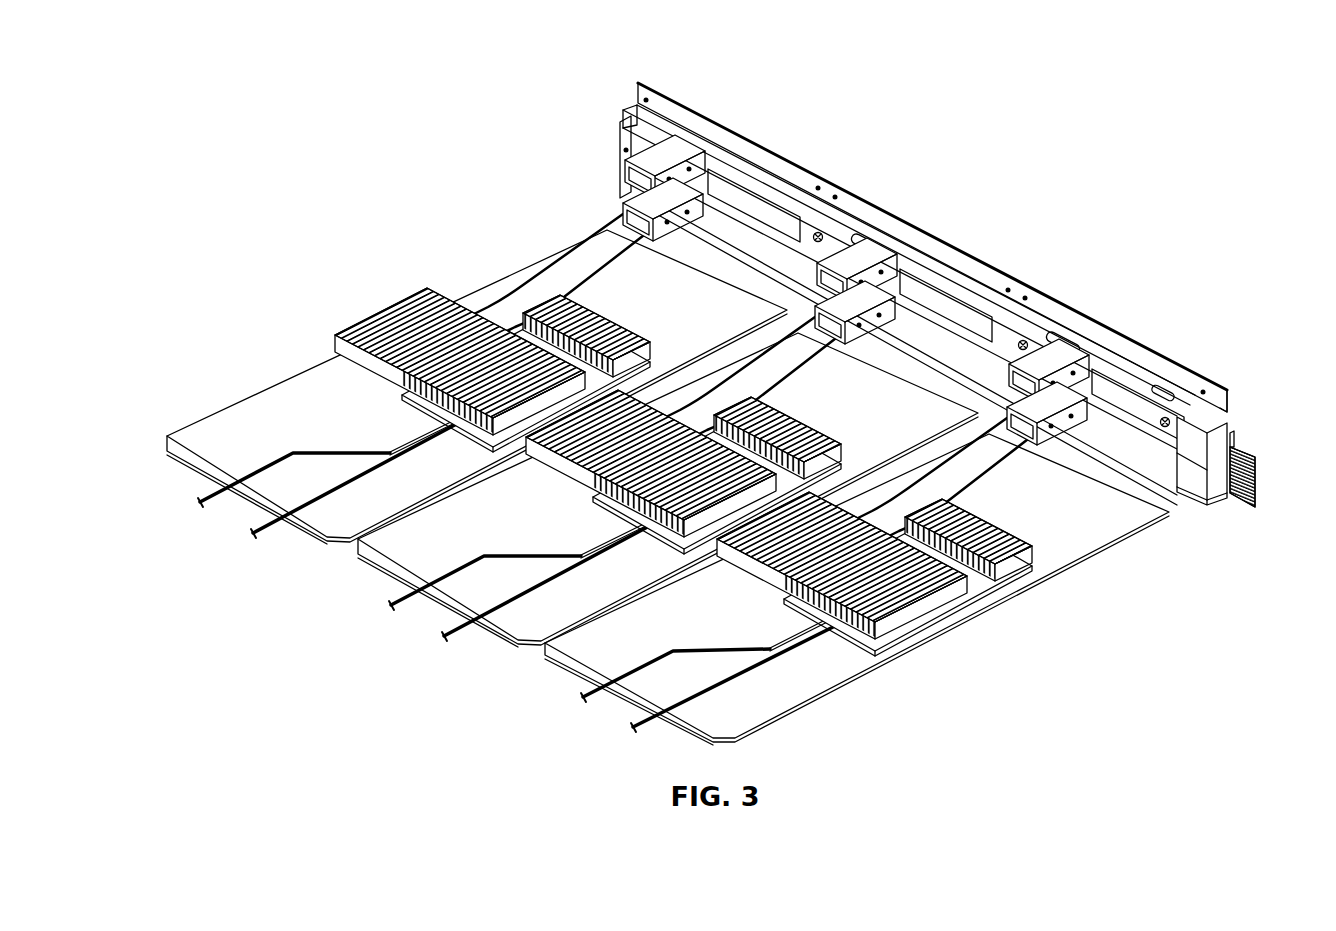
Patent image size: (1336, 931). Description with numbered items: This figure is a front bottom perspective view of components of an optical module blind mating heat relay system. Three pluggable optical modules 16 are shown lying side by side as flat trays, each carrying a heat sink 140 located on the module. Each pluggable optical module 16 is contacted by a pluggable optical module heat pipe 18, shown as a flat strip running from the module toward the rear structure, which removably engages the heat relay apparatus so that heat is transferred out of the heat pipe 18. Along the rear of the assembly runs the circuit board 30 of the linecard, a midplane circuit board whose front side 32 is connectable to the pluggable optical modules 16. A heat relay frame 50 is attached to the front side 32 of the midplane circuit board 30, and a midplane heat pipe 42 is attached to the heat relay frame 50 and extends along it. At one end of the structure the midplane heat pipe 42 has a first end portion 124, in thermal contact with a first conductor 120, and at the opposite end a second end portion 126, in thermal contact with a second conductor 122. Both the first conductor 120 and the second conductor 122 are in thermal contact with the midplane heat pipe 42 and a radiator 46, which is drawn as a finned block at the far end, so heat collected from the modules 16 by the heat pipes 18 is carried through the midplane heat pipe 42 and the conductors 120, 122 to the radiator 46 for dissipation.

The pluggable optical module 16 is at (212, 416).
The pluggable optical module heat pipe 18 is at (541, 277).
The circuit board 30 is at (1198, 378).
The front side 32 is at (1228, 393).
The midplane heat pipe 42 is at (742, 178).
The radiator 46 is at (1258, 487).
The heat relay frame 50 is at (822, 232).
The first conductor 120 is at (626, 145).
The second conductor 122 is at (1217, 494).
The first end portion 124 is at (636, 122).
The second end portion 126 is at (1210, 426).
The heat sink 140 is at (374, 322).